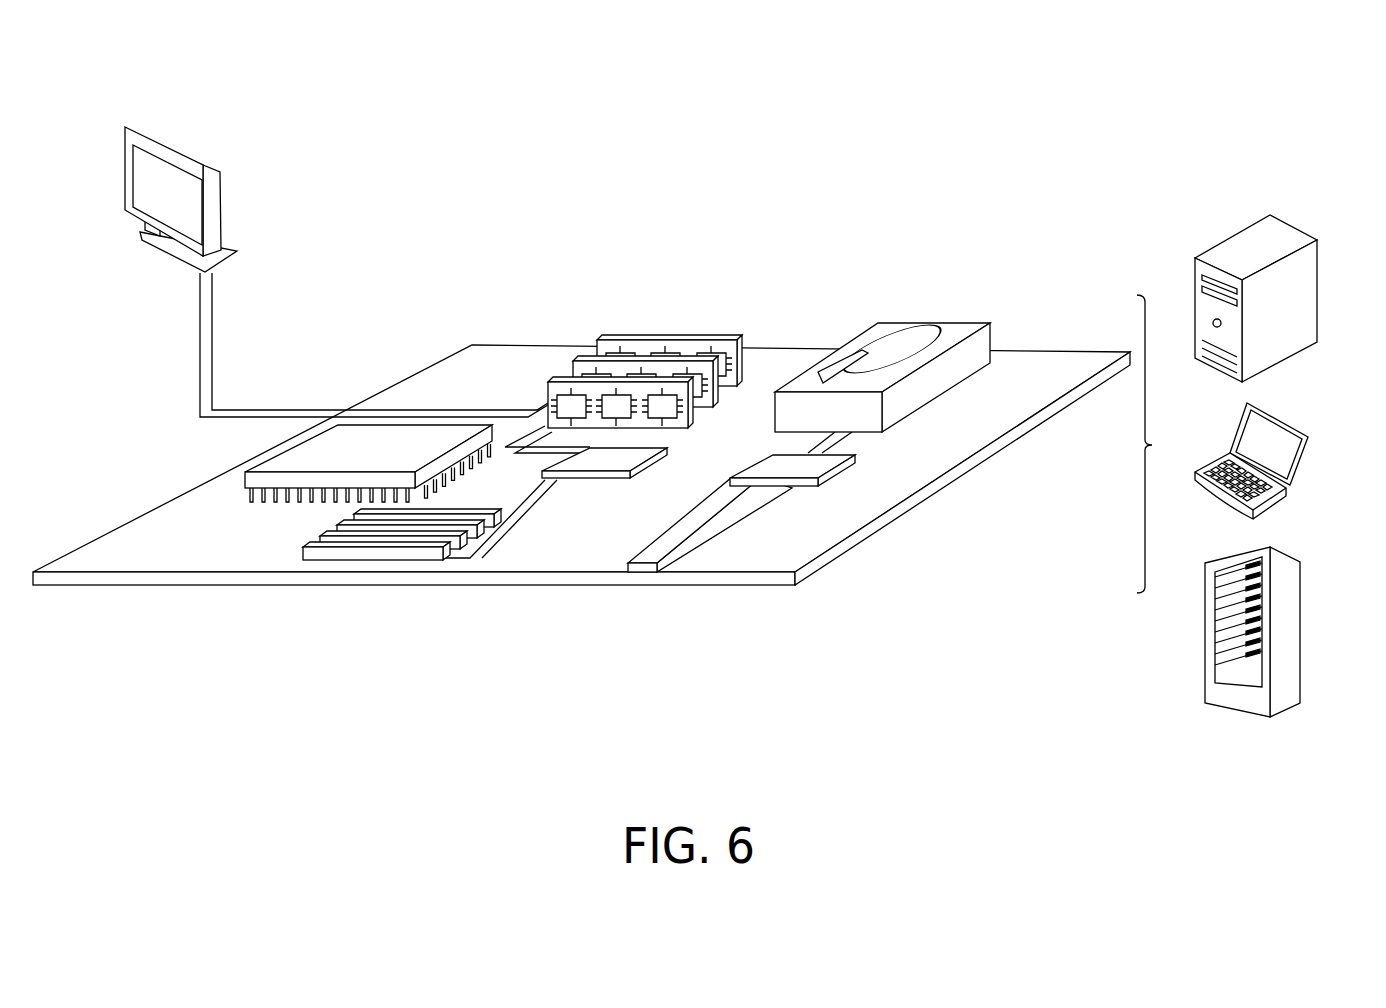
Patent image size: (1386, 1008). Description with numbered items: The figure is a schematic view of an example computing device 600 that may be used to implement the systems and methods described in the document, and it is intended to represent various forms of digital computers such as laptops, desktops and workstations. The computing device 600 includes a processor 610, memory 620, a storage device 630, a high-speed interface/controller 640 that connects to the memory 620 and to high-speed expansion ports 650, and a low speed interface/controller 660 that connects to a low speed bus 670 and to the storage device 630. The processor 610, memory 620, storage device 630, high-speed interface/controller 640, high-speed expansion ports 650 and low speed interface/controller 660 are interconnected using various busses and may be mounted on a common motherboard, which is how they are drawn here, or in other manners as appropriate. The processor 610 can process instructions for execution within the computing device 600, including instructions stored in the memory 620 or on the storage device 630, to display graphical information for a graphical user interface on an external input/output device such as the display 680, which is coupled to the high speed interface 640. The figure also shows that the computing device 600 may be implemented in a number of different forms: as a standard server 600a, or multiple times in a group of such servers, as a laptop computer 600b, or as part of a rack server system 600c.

The computing device 600 is at (953, 100).
The standard server 600a is at (1229, 238).
The laptop computer 600b is at (1290, 425).
The rack server system 600c is at (1296, 611).
The processor 610 is at (245, 478).
The memory 620 is at (663, 341).
The storage device 630 is at (932, 321).
The high-speed interface/controller 640 is at (610, 480).
The high-speed expansion ports 650 is at (303, 549).
The low speed interface/controller 660 is at (783, 467).
The low speed bus 670 is at (658, 574).
The display 680 is at (125, 179).